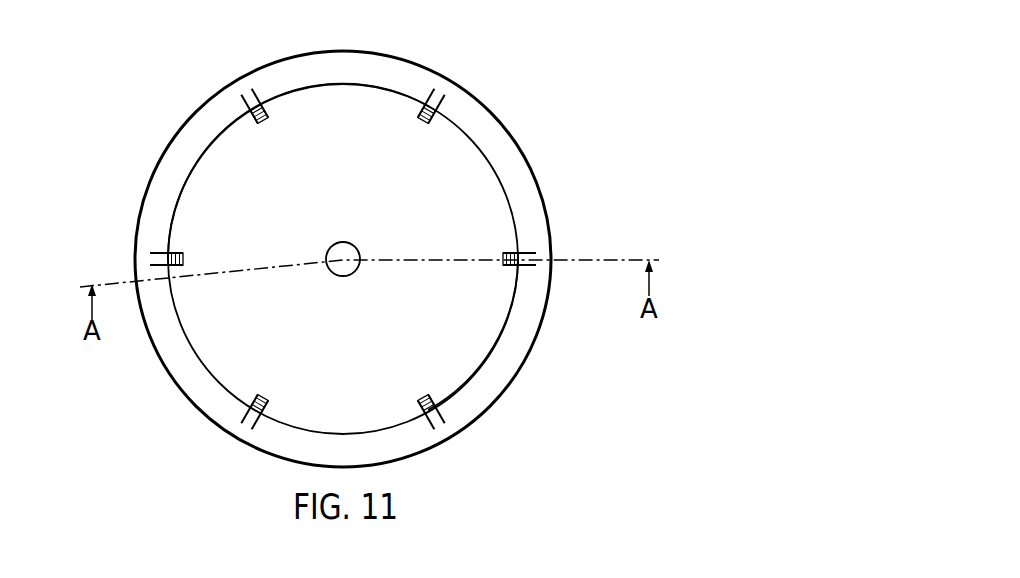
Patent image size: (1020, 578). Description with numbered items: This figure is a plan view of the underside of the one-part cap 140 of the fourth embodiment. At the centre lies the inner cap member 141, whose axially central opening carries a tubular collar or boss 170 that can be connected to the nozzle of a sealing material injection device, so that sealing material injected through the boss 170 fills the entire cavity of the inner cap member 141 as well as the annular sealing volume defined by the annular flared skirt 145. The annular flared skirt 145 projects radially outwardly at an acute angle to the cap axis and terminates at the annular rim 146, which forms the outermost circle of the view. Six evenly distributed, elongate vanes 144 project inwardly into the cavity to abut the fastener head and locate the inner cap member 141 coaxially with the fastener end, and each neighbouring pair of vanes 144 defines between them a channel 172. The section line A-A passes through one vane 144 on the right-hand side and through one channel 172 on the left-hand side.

The cap 140 is at (393, 254).
The inner cap member 141 is at (487, 357).
The vanes 144 is at (258, 118).
The annular flared skirt 145 is at (536, 222).
The annular rim 146 is at (532, 164).
The boss 170 is at (350, 244).
The channels 172 is at (338, 85).